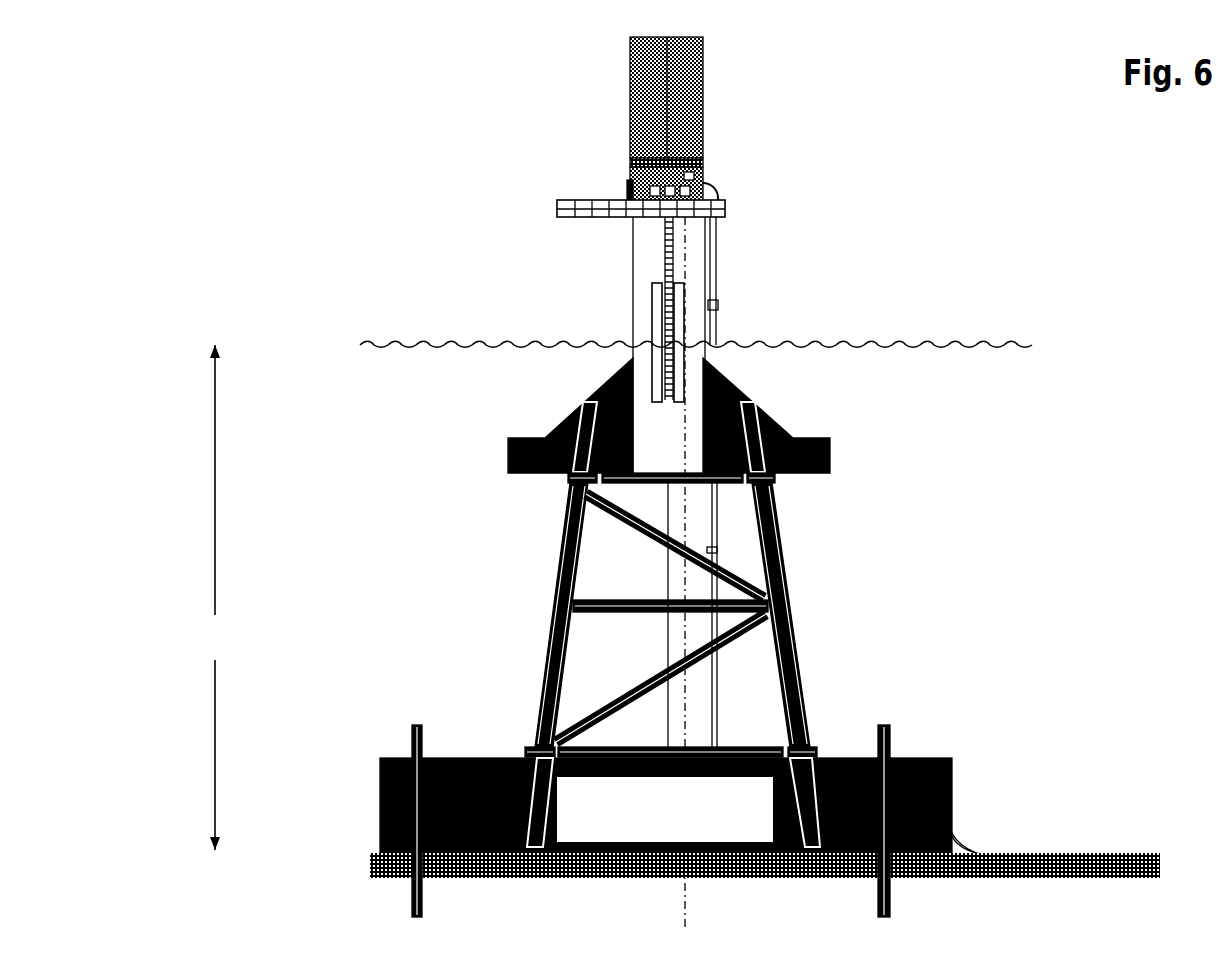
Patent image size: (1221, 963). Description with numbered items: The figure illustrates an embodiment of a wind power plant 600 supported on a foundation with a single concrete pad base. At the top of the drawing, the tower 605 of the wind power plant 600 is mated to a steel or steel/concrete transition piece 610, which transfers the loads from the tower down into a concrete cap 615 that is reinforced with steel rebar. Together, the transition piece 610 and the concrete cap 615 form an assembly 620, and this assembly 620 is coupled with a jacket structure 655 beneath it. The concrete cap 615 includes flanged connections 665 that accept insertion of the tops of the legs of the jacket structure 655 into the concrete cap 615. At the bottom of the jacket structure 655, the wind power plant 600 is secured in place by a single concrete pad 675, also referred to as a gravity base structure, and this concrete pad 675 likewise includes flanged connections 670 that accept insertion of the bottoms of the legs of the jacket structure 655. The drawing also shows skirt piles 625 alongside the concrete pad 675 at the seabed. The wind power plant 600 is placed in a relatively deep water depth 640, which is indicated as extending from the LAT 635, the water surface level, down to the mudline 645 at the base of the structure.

The wind power plant 600 is at (264, 121).
The tower 605 is at (707, 138).
The transition piece 610 is at (633, 271).
The concrete cap 615 is at (508, 465).
The assembly 620 is at (723, 400).
The skirt piles 625 is at (422, 913).
The LAT 635 is at (673, 355).
The water depth 640 is at (272, 597).
The mudline 645 is at (719, 865).
The jacket structure 655 is at (543, 687).
The flanged connections 665 is at (778, 482).
The flanged connections 670 is at (812, 740).
The single concrete pad 675 is at (692, 808).